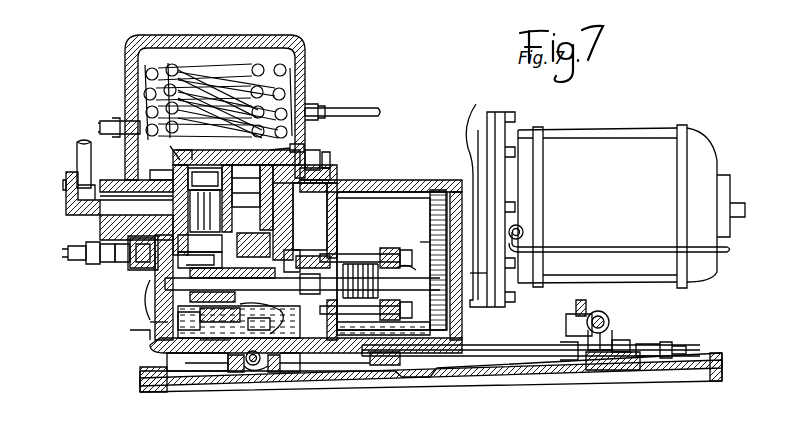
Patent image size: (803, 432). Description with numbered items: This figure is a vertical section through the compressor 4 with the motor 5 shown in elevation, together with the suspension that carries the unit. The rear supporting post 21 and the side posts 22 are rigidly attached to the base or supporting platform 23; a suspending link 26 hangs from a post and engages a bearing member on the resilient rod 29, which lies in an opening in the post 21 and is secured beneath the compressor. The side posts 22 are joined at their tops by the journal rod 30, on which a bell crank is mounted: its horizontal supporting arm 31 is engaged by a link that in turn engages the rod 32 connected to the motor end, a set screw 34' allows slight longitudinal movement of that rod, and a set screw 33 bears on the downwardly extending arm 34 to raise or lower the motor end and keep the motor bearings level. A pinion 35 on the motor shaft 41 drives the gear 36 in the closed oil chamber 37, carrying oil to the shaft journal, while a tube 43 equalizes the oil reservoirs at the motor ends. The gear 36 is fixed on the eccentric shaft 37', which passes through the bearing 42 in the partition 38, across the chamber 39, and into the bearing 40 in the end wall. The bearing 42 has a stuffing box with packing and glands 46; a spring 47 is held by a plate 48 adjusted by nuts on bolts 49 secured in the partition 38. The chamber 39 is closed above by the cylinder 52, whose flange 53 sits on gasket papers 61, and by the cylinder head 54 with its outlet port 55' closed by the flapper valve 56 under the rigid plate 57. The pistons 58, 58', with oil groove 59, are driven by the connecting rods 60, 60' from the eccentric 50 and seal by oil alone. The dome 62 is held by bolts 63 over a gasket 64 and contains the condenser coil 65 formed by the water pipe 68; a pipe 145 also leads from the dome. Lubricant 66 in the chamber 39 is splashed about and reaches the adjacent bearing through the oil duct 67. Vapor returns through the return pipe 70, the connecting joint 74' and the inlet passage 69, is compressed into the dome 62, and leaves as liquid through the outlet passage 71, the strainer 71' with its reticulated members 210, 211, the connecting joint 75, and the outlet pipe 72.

The compressor 4 is at (160, 352).
The motor 5 is at (616, 209).
The rear supporting post 21 is at (270, 360).
The side post 22 is at (610, 340).
The base or supporting platform 23 is at (672, 376).
The suspending link 26 is at (580, 314).
The resilient rod 29 is at (252, 366).
The journal rod 30 is at (604, 314).
The horizontal supporting arm 31 is at (566, 324).
The rod 32 is at (506, 356).
The set screw 33 is at (686, 330).
The downwardly extending arm 34 is at (610, 375).
The set screw 34' is at (381, 381).
The pinion 35 is at (430, 212).
The gear 36 is at (430, 248).
The oil chamber 37 is at (392, 241).
The pump or eccentric shaft 37' is at (412, 267).
The partition 38 is at (334, 230).
The chamber 39 is at (168, 272).
The bearing 40 is at (182, 286).
The motor shaft 41 is at (458, 148).
The bearing 42 is at (239, 319).
The tube 43 is at (648, 256).
The glands 46 is at (306, 258).
The spring 47 is at (356, 264).
The plate 48 is at (390, 322).
The bolts 49 is at (370, 254).
The eccentric 50 is at (207, 320).
The cylinder 52 is at (258, 256).
The flange 53 is at (310, 152).
The cylinder head 54 is at (219, 197).
The outlet port 55' is at (225, 198).
The flapper valve 56 is at (255, 144).
The rigid plate 57 is at (219, 219).
The piston 58 is at (266, 212).
The piston 58' is at (310, 216).
The oil groove 59 is at (200, 257).
The connecting rod 60 is at (187, 370).
The connecting rod 60' is at (212, 369).
The gasket papers 61 is at (155, 172).
The dome 62 is at (292, 44).
The bolts 63 is at (330, 146).
The gasket 64 is at (322, 170).
The condenser coil 65 is at (272, 88).
The lubricant 66 is at (160, 262).
The oil duct 67 is at (302, 282).
The water pipe 68 is at (103, 119).
The inlet passage 69 is at (105, 240).
The return pipe 70 is at (78, 150).
The outlet passage 71 is at (124, 267).
The strainer 71' is at (110, 261).
The outlet pipe 72 is at (66, 252).
The connecting joint 74' is at (63, 193).
The connecting joint 75 is at (90, 258).
The pipe 145 is at (364, 108).
The reticulated member 210 is at (156, 218).
The reticulated member 211 is at (135, 226).